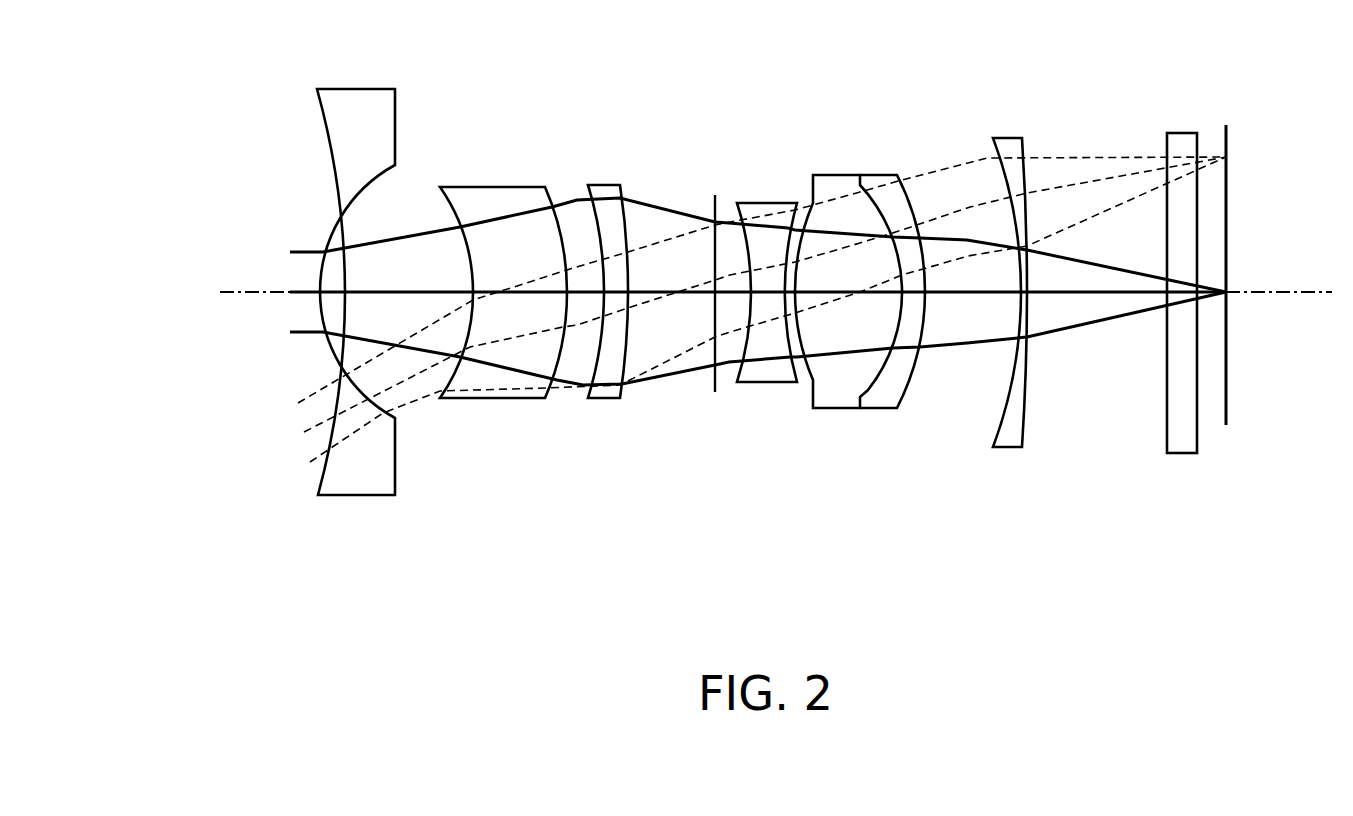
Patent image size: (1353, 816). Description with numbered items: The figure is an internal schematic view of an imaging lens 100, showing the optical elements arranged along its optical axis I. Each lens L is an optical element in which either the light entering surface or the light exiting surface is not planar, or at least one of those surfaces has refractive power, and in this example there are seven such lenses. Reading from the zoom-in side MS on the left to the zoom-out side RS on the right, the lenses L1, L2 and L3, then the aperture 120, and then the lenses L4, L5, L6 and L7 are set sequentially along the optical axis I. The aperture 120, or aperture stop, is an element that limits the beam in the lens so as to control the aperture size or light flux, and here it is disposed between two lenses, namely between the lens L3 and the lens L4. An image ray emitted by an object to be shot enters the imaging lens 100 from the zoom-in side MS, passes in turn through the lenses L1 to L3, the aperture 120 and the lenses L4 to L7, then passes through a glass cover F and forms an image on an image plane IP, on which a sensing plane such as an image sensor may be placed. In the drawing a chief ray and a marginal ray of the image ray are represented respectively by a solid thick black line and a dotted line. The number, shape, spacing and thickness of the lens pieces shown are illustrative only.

The imaging lens 100 is at (738, 308).
The aperture 120 is at (713, 198).
The lens L is at (590, 308).
The lens L1 is at (352, 98).
The lens L2 is at (495, 193).
The lens L3 is at (605, 188).
The lens L4 is at (766, 206).
The lens L5 is at (840, 182).
The lens L6 is at (881, 182).
The lens L7 is at (1007, 143).
The glass cover F is at (1181, 138).
The image plane IP is at (1228, 137).
The optical axis I is at (228, 291).
The zoom-in side MS is at (255, 68).
The zoom-out side RS is at (1325, 68).